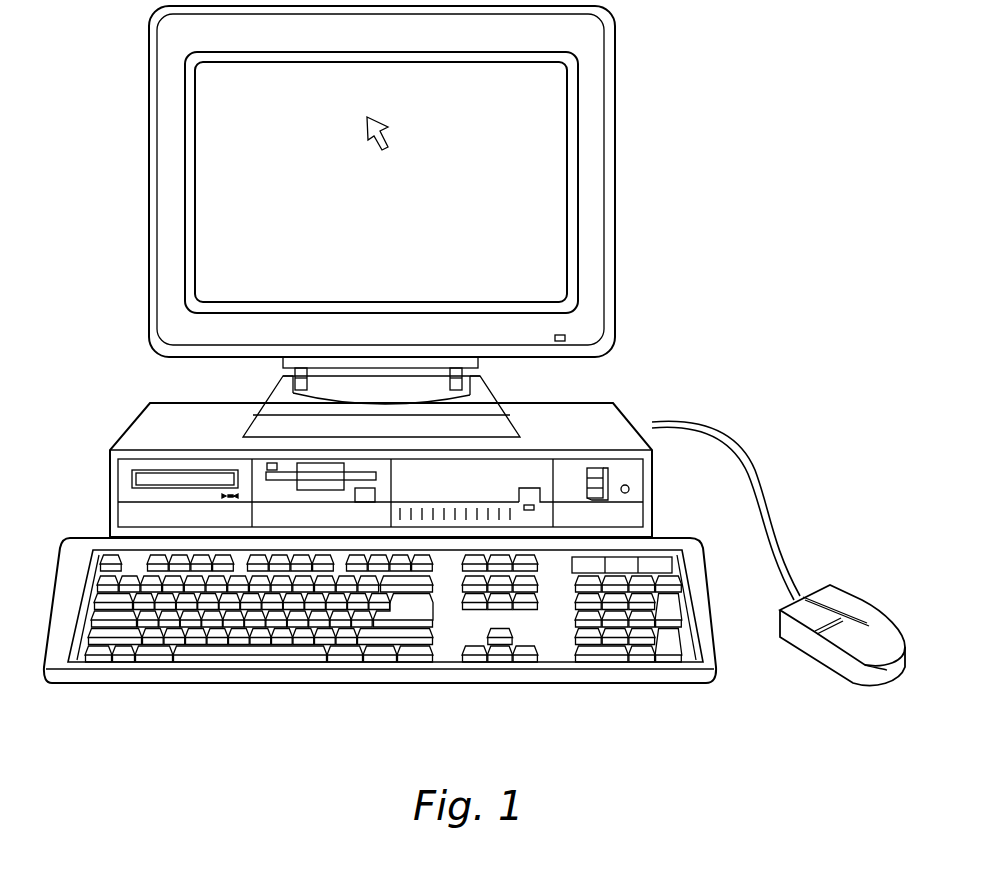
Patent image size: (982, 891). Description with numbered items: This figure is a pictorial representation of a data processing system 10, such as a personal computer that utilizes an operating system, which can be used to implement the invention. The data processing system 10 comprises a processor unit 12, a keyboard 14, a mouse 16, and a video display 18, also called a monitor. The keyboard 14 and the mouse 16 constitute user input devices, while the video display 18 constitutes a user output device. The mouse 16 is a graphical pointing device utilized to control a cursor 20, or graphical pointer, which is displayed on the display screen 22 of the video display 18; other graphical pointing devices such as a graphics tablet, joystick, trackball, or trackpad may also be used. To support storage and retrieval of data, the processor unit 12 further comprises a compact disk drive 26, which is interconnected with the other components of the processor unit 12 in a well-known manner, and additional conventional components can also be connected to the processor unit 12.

The data processing system 10 is at (782, 261).
The processor unit 12 is at (130, 424).
The keyboard 14 is at (226, 683).
The mouse 16 is at (857, 597).
The video display 18 is at (615, 172).
The cursor 20 is at (391, 125).
The display screen 22 is at (400, 224).
The compact disk drive 26 is at (135, 478).